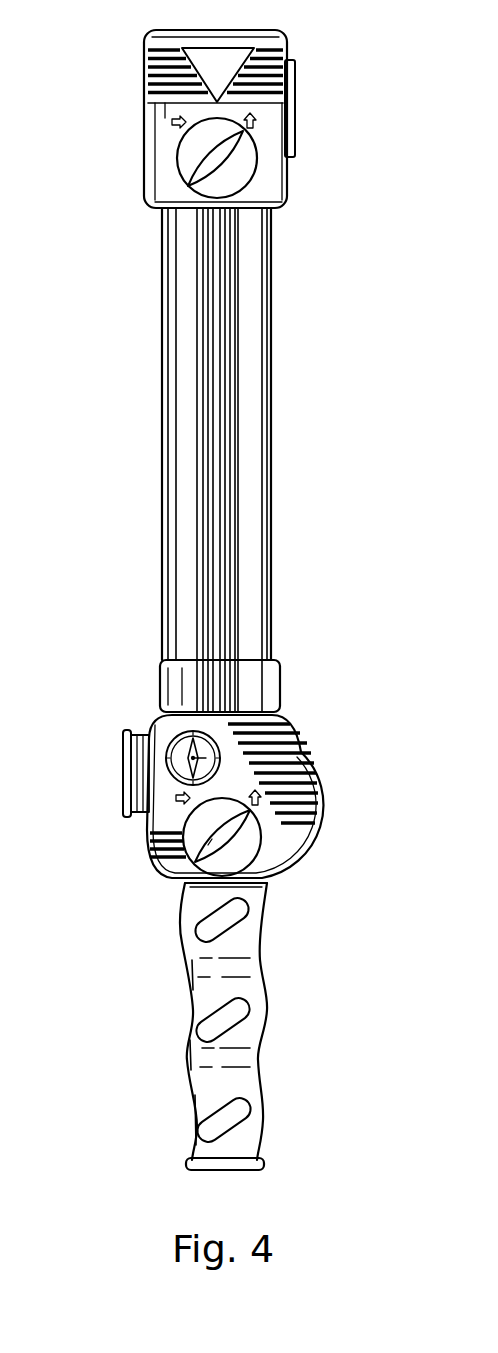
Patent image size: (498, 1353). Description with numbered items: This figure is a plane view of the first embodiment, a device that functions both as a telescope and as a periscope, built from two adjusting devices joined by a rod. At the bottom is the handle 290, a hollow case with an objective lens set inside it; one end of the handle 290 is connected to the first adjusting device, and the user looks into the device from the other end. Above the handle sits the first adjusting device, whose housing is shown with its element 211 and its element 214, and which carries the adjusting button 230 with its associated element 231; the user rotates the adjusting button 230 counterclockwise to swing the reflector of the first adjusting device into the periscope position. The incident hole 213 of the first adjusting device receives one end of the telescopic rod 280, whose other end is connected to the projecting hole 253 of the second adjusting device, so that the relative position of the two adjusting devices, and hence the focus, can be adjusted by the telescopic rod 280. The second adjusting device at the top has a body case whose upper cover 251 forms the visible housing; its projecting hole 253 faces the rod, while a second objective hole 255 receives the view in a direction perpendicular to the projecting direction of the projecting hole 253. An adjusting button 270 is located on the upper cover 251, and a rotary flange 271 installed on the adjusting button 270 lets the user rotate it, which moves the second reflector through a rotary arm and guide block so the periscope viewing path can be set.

The upper cover 251 is at (267, 188).
The second objective hole 255 is at (297, 122).
The adjusting button 270 is at (185, 153).
The rotary flange 271 is at (200, 172).
The projecting hole 253 is at (202, 208).
The telescopic rod 280 is at (263, 492).
The incident hole 213 is at (262, 708).
The body housing 211 is at (283, 840).
The adjusting button 230 is at (190, 826).
The body knob lever 231 is at (200, 866).
The handle neck 214 is at (206, 874).
The handle 290 is at (257, 1002).